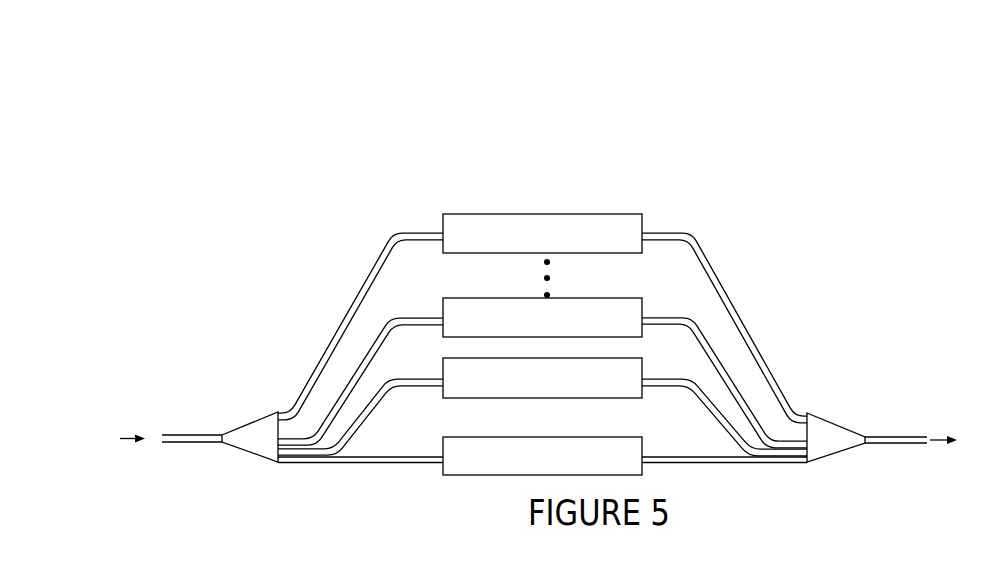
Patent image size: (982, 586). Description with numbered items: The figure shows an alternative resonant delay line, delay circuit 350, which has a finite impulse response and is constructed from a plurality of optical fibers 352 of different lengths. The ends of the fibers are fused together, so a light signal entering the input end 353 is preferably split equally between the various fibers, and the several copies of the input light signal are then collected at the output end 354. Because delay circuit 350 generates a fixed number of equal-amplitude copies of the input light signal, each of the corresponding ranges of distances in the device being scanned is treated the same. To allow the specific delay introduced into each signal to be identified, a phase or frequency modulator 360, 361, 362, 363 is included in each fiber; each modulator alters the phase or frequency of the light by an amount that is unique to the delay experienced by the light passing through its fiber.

The delay circuit 350 is at (322, 136).
The optical fibers 352 is at (645, 457).
The input end 353 is at (258, 422).
The output end 354 is at (843, 427).
The phase modulator 360 is at (458, 213).
The phase modulator 361 is at (488, 300).
The phase modulator 362 is at (452, 387).
The phase modulator 363 is at (448, 468).